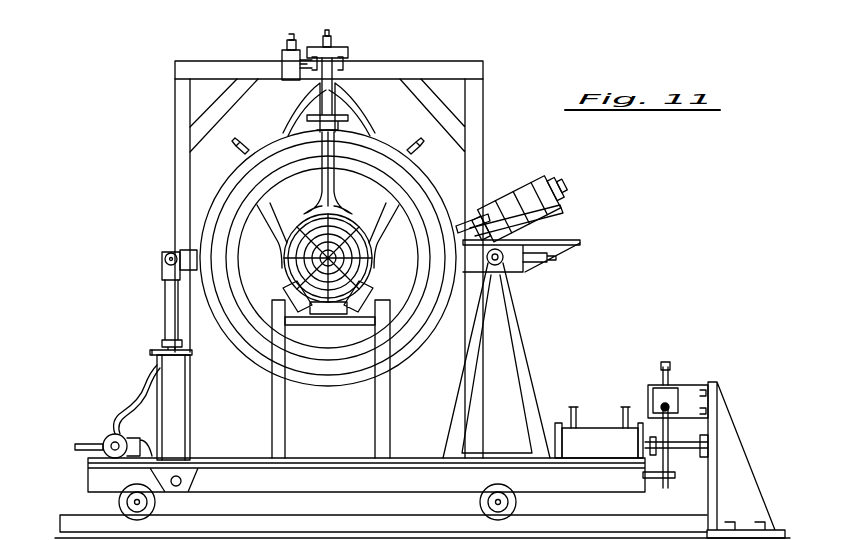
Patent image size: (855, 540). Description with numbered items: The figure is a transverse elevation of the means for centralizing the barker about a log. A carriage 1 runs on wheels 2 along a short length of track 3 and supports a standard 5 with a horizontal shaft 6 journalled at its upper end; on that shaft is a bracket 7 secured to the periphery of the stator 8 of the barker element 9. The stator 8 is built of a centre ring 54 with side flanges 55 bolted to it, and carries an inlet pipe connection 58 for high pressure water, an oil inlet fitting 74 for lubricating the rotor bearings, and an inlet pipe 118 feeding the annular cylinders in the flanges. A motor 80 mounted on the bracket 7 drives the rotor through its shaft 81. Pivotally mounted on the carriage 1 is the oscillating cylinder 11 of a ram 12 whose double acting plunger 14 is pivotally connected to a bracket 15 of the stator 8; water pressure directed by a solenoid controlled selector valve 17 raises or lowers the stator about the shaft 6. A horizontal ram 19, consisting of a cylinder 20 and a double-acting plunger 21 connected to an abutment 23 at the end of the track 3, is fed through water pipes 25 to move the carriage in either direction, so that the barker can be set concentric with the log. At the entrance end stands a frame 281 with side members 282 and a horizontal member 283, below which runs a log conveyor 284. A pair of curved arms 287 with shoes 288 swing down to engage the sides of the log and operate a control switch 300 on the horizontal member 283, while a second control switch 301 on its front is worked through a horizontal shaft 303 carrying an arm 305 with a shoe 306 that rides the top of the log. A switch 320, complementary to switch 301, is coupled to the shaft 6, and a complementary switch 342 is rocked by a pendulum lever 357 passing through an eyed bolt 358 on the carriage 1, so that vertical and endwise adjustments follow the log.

The carriage 1 is at (418, 470).
The wheels 2 is at (118, 503).
The track 3 is at (242, 498).
The standard 5 is at (532, 352).
The horizontal shaft 6 is at (505, 270).
The bracket 7 is at (580, 245).
The stator 8 is at (245, 348).
The barker element 9 is at (414, 340).
The oscillating cylinder 11 is at (190, 420).
The ram 12 is at (190, 440).
The double acting plunger 14 is at (170, 318).
The bracket 15 is at (170, 252).
The solenoid controlled selector valve 17 is at (102, 436).
The horizontal ram 19 is at (574, 458).
The cylinder 20 is at (616, 458).
The double-acting plunger 21 is at (684, 450).
The abutment 23 is at (738, 430).
The water pipes 25 is at (584, 410).
The centre ring 54 is at (270, 380).
The side flanges 55 is at (398, 363).
The inlet pipe connection 58 is at (350, 118).
The oil inlet fitting 74 is at (236, 150).
The motor 80 is at (548, 182).
The shaft 81 is at (462, 214).
The inlet pipe 118 is at (414, 150).
The frame 281 is at (175, 72).
The side members 282 is at (190, 140).
The horizontal member 283 is at (250, 61).
The log conveyor 284 is at (283, 290).
The arms 287 is at (292, 117).
The shoes 288 is at (286, 236).
The control switch 300 is at (350, 52).
The control switch 301 is at (288, 48).
The horizontal shaft 303 is at (305, 79).
The arm 305 is at (316, 206).
The shoe 306 is at (340, 206).
The switch 320 is at (540, 262).
The complementary switch 342 is at (648, 395).
The pendulum lever 357 is at (668, 428).
The eyed bolt 358 is at (656, 480).